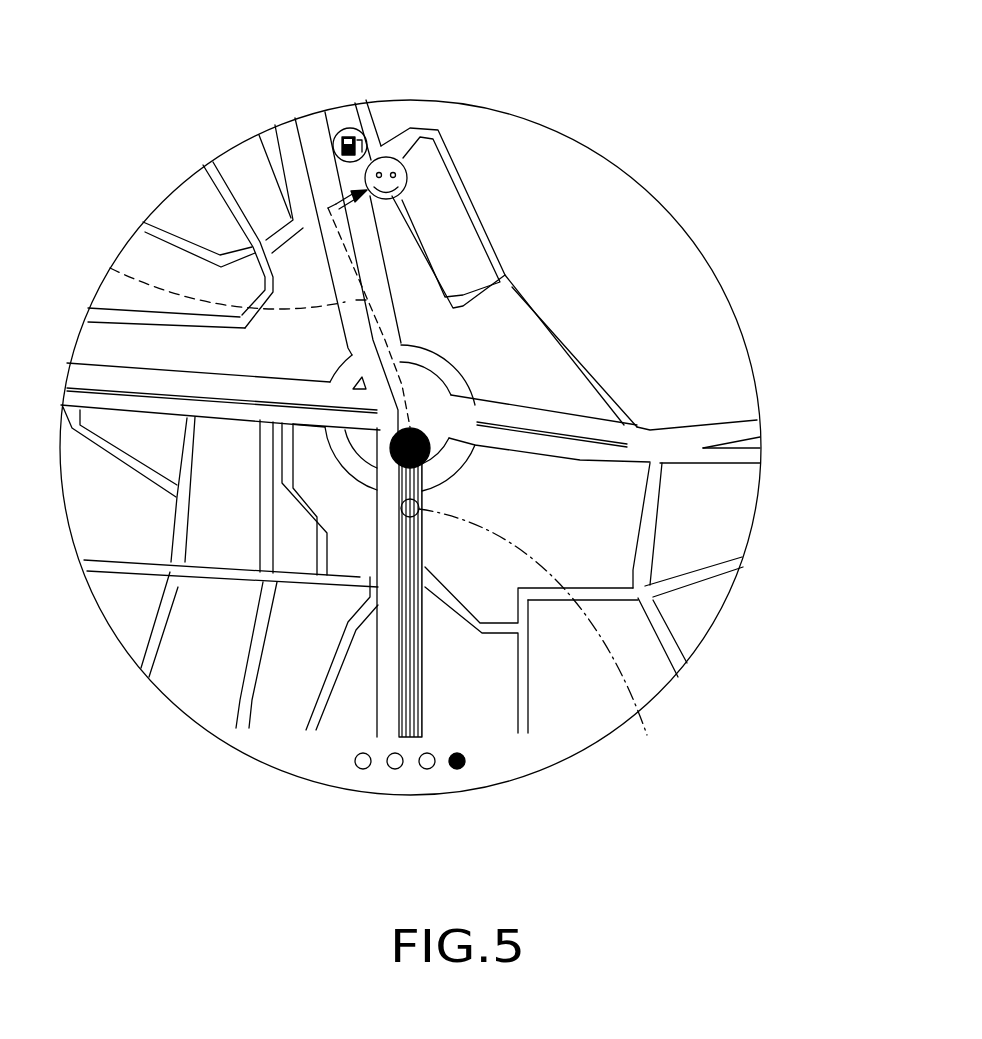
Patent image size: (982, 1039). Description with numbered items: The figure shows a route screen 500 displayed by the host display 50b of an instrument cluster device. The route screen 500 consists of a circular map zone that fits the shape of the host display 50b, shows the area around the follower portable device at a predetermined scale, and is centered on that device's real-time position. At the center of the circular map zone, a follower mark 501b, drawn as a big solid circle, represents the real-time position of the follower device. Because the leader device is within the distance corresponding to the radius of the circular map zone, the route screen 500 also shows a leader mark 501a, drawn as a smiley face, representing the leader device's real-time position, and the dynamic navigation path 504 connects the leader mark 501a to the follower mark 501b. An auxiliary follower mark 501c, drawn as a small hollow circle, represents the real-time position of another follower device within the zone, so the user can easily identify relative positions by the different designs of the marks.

The host display 50b is at (207, 168).
The route screen 500 is at (547, 168).
The leader mark 501a is at (398, 160).
The follower mark 501b is at (432, 450).
The auxiliary follower mark 501c is at (555, 633).
The dynamic navigation path 504 is at (110, 268).